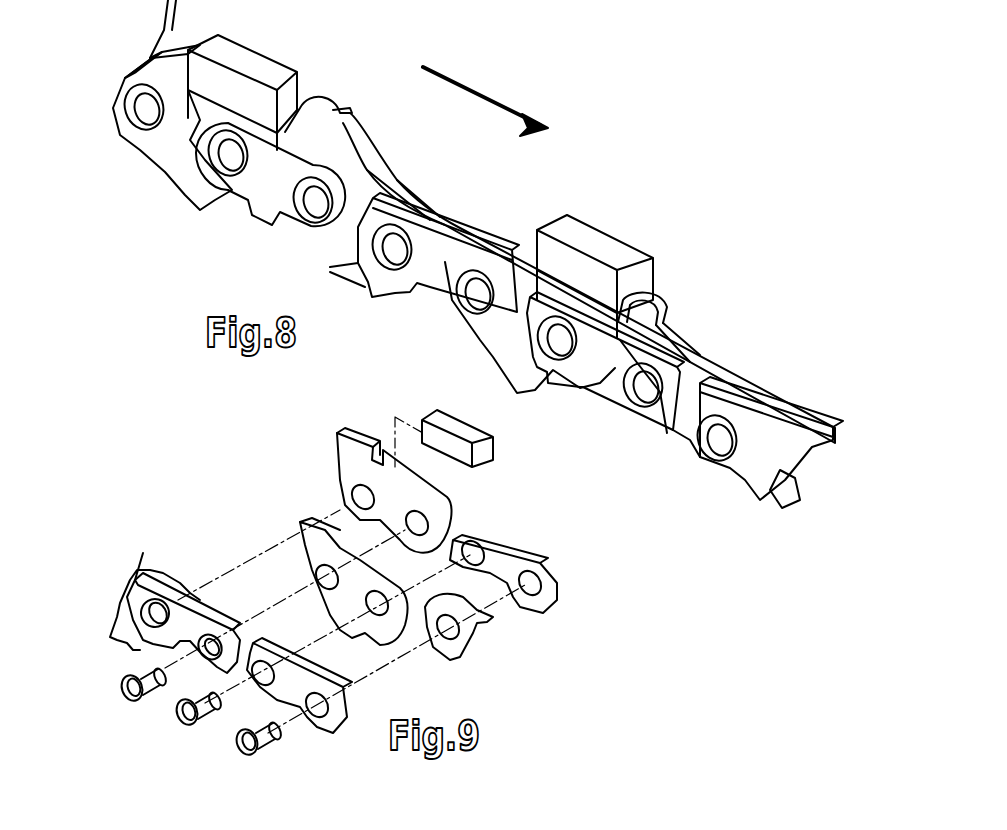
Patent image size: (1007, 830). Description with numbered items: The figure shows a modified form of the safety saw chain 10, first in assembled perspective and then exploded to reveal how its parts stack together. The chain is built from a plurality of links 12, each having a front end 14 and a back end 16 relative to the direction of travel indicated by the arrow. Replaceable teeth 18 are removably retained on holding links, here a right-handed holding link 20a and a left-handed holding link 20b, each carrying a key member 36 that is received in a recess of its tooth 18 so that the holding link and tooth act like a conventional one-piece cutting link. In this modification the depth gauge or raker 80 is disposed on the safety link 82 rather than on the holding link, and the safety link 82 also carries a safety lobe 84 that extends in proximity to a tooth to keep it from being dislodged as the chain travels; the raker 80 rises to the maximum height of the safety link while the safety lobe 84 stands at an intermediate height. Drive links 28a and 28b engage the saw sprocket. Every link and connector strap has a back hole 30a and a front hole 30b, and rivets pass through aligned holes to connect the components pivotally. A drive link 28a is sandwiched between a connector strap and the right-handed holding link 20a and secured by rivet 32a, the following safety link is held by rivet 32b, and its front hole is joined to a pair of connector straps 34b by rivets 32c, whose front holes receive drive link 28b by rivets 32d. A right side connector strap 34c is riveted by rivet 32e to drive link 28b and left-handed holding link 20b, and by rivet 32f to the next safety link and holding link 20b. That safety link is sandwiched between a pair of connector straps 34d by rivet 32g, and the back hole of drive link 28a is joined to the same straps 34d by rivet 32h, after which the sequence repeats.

In FIG. 8, the safety saw chain 10 is at (674, 157).
In FIG. 8, the links 12 is at (160, 224).
In FIG. 8, the front end 14 is at (418, 200).
In FIG. 8, the back end 16 is at (307, 110).
In FIG. 8, the replaceable tooth 18 is at (242, 63).
In FIG. 9, the replaceable tooth 18 is at (470, 433).
In FIG. 8, the right-handed holding link 20a is at (260, 175).
In FIG. 9, the left-handed holding link 20b is at (340, 467).
In FIG. 8, the drive link 28a is at (165, 165).
In FIG. 9, the drive link 28a is at (477, 627).
In FIG. 8, the drive link 28b is at (500, 350).
In FIG. 9, the drive link 28b is at (127, 630).
In FIG. 9, the back hole 30a is at (327, 582).
In FIG. 9, the front hole 30b is at (208, 652).
In FIG. 8, the rivet 32a is at (222, 158).
In FIG. 8, the rivet 32b is at (312, 208).
In FIG. 8, the rivet 32c is at (390, 249).
In FIG. 8, the rivet 32d is at (472, 293).
In FIG. 8, the rivet 32e is at (560, 342).
In FIG. 9, the rivet 32e is at (150, 613).
In FIG. 8, the rivet 32f is at (645, 390).
In FIG. 9, the rivet 32f is at (125, 692).
In FIG. 8, the rivet 32g is at (717, 442).
In FIG. 9, the rivet 32g is at (187, 718).
In FIG. 8, the rivet 32h is at (142, 108).
In FIG. 9, the rivet 32h is at (247, 748).
In FIG. 8, the connector straps 34b is at (457, 217).
In FIG. 8, the right side connector strap 34c is at (600, 382).
In FIG. 9, the right side connector strap 34c is at (190, 615).
In FIG. 8, the connector straps 34d is at (138, 77).
In FIG. 9, the connector straps 34d is at (333, 687).
In FIG. 9, the key member 36 is at (382, 427).
In FIG. 8, the raker 80 is at (340, 130).
In FIG. 9, the raker 80 is at (333, 520).
In FIG. 8, the safety link 82 is at (367, 177).
In FIG. 8, the safety lobe 84 is at (293, 110).
In FIG. 9, the safety lobe 84 is at (305, 540).